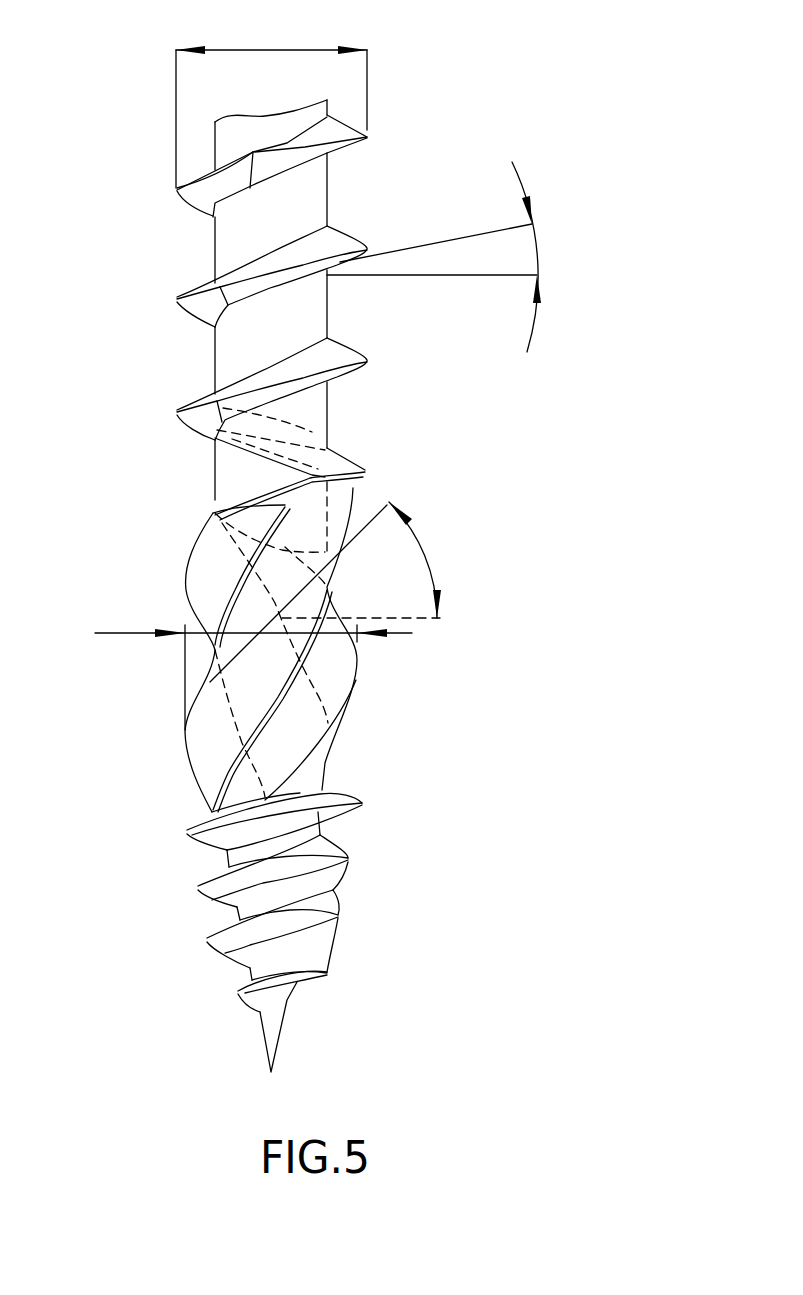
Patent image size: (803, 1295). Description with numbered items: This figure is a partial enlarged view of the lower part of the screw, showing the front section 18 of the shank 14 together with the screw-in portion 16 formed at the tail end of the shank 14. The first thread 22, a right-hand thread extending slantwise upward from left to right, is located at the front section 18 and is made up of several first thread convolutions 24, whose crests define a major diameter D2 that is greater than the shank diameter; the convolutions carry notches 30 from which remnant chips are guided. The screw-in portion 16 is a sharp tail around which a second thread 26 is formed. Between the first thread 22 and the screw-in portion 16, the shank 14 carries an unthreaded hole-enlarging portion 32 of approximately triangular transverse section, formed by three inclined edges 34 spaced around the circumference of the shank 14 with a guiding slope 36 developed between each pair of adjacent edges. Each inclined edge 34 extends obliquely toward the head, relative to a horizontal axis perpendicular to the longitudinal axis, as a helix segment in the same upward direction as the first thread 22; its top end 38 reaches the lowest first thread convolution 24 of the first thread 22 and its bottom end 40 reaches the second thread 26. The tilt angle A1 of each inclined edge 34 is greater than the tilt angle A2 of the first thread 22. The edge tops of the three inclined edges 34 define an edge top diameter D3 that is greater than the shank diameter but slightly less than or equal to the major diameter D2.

The shank 14 is at (310, 193).
The screw-in portion 16 is at (270, 1028).
The front section 18 is at (318, 428).
The first thread 22 is at (183, 302).
The first thread convolutions 24 is at (367, 135).
The second thread 26 is at (297, 983).
The notches 30 is at (183, 412).
The hole-enlarging portion 32 is at (412, 710).
The inclined edges 34 is at (185, 753).
The guiding slope 36 is at (245, 590).
The top end 38 is at (213, 517).
The bottom end 40 is at (207, 807).
The major diameter D2 is at (271, 98).
The edge top diameter D3 is at (253, 660).
The tilt angle A1 is at (422, 552).
The tilt angle A2 is at (535, 250).